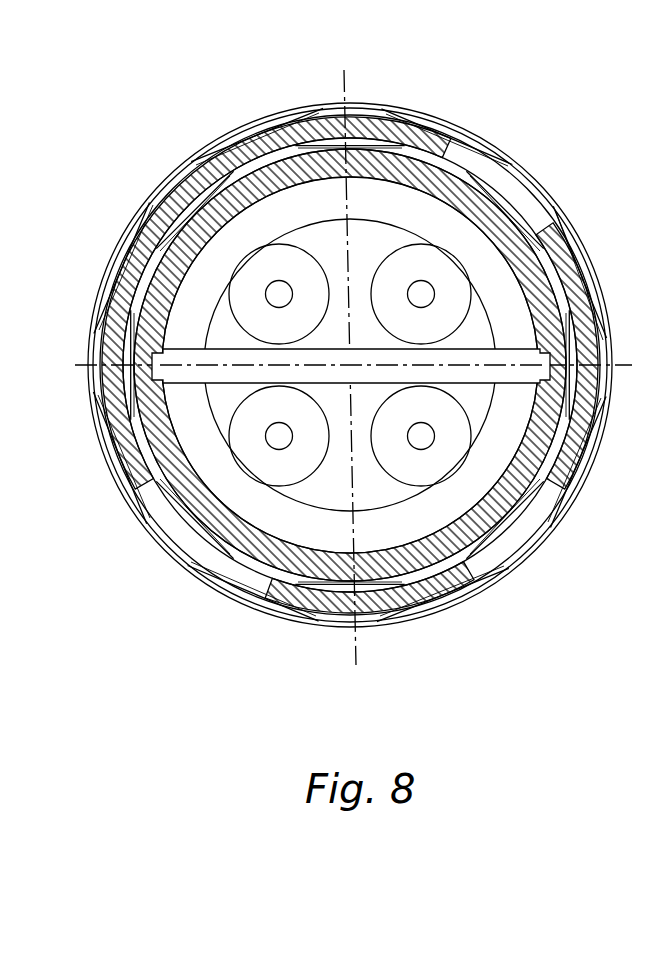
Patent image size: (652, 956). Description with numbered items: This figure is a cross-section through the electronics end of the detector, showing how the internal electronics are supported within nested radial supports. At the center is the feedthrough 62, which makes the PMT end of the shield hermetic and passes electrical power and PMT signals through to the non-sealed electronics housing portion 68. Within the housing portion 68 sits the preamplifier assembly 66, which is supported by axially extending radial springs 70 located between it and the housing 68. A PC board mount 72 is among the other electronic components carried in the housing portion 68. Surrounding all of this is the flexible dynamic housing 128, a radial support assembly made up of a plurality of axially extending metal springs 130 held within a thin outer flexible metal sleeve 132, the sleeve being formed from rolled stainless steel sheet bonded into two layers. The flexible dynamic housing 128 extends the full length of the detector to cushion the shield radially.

The flexible dynamic housing 128 is at (436, 107).
The axially extending metal springs 130 is at (278, 118).
The outer flexible metal sleeve 132 is at (220, 140).
The electronics housing portion 68 is at (282, 595).
The axially extending radial springs 70 is at (173, 240).
The PC board mount 72 is at (248, 544).
The feedthrough 62 is at (373, 252).
The preamplifier assembly 66 is at (522, 352).